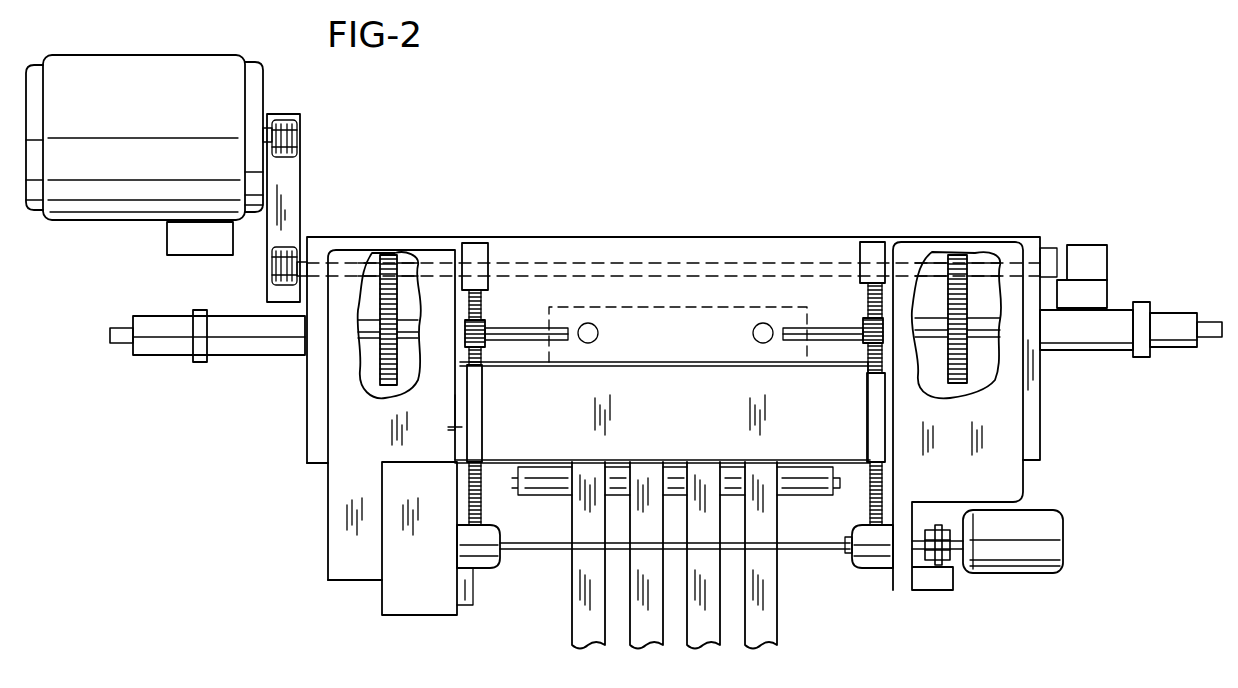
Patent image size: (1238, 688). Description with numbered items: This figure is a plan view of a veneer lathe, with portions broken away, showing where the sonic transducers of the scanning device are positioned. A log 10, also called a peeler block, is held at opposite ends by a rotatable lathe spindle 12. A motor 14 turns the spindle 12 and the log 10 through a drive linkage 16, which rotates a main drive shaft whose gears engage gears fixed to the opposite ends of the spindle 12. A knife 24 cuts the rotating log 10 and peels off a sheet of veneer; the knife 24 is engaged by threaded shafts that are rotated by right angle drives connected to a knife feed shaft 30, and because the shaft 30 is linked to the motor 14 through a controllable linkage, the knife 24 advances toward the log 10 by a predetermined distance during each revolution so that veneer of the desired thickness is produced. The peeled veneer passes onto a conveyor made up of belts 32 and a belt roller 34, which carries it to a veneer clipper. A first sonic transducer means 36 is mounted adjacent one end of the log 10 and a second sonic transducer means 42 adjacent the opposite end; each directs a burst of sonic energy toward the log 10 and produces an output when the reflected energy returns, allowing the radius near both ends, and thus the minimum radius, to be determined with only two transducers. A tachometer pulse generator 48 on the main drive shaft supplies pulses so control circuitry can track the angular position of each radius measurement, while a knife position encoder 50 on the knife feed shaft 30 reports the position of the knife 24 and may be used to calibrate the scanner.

The log 10 is at (668, 310).
The lathe spindle 12 is at (504, 330).
The motor 14 is at (190, 58).
The drive linkage 16 is at (303, 190).
The knife 24 is at (680, 430).
The knife feed shaft 30 is at (793, 551).
The belts 32 is at (590, 648).
The belt roller 34 is at (540, 490).
The first sonic transducer means 36 is at (765, 343).
The second sonic transducer means 42 is at (590, 343).
The tachometer pulse generator 48 is at (1097, 258).
The knife position encoder 50 is at (1015, 570).